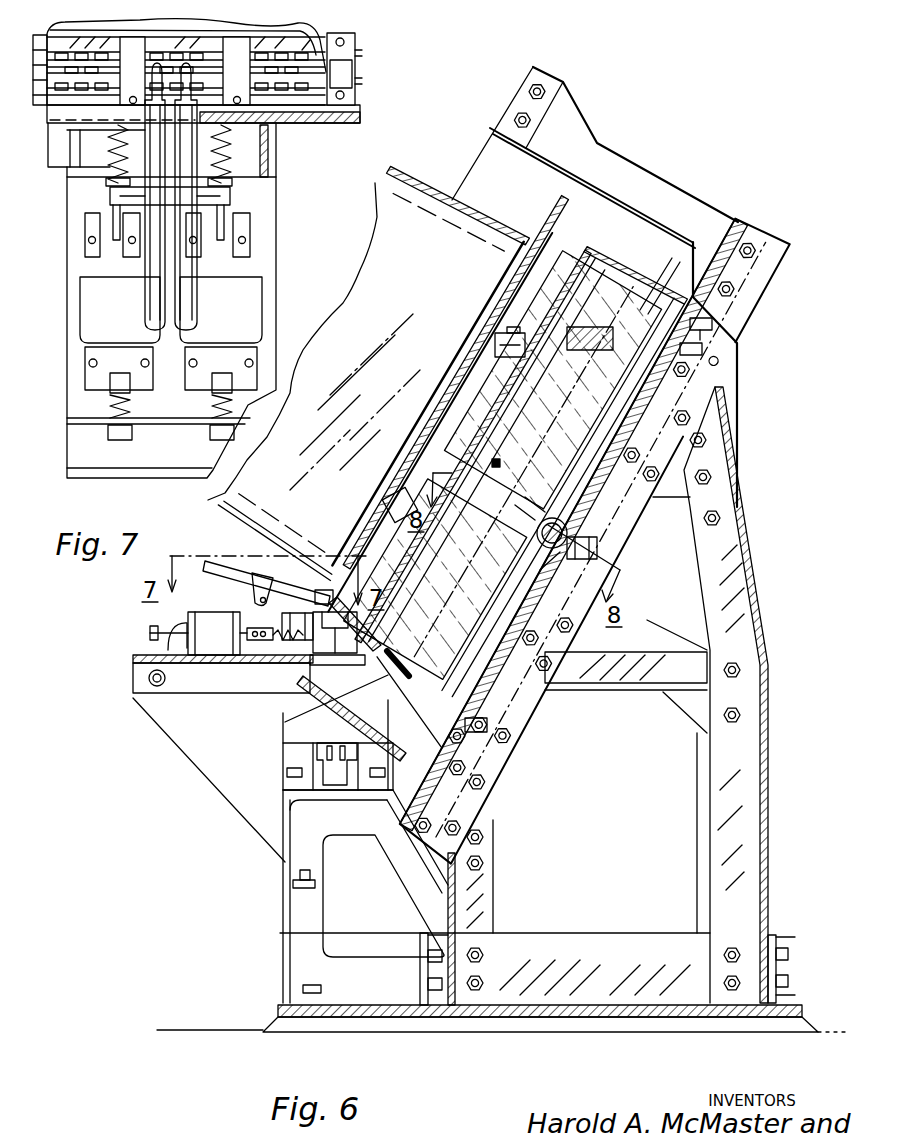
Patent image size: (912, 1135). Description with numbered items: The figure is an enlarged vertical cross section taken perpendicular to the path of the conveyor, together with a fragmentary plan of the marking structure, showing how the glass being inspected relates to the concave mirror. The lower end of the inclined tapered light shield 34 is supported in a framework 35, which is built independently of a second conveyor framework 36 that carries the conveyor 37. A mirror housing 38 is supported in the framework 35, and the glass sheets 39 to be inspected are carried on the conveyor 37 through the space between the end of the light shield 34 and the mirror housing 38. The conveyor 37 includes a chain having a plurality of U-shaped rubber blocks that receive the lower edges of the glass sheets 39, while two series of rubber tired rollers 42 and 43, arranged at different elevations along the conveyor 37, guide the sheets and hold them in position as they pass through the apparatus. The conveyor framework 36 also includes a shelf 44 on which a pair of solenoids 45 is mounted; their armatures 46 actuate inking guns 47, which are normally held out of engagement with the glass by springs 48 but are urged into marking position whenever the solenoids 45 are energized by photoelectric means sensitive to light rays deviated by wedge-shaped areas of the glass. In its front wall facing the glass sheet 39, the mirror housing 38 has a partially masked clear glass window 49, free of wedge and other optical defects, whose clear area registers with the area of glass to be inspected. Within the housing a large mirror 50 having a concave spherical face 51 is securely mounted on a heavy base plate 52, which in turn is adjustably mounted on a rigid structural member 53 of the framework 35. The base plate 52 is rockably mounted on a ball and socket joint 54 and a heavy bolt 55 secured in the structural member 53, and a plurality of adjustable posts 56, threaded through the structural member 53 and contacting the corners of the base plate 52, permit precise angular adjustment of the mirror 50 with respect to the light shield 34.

In FIG. 6, the inclined tapered light shield 34 is at (415, 232).
In FIG. 6, the framework 35 is at (720, 577).
In FIG. 6, the conveyor framework 36 is at (308, 927).
In FIG. 7, the conveyor 37 is at (345, 83).
In FIG. 6, the conveyor 37 is at (320, 753).
In FIG. 6, the mirror housing 38 is at (628, 270).
In FIG. 7, the glass sheets 39 is at (345, 48).
In FIG. 6, the glass sheets 39 is at (555, 237).
In FIG. 6, the rubber tired rollers 42 is at (510, 333).
In FIG. 6, the rubber tired rollers 43 is at (393, 496).
In FIG. 7, the shelf 44 is at (263, 322).
In FIG. 6, the shelf 44 is at (198, 660).
In FIG. 7, the solenoids 45 is at (120, 302).
In FIG. 6, the solenoids 45 is at (223, 633).
In FIG. 7, the armatures 46 is at (120, 188).
In FIG. 6, the armatures 46 is at (290, 642).
In FIG. 7, the inking guns 47 is at (152, 143).
In FIG. 6, the inking guns 47 is at (248, 574).
In FIG. 7, the springs 48 is at (127, 178).
In FIG. 6, the springs 48 is at (297, 640).
In FIG. 6, the clear glass window 49 is at (495, 417).
In FIG. 6, the mirror 50 is at (580, 363).
In FIG. 6, the concave spherical face 51 is at (496, 462).
In FIG. 6, the base plate 52 is at (648, 310).
In FIG. 6, the rigid structural member 53 is at (705, 323).
In FIG. 6, the ball and socket joint 54 is at (568, 527).
In FIG. 6, the bolt 55 is at (598, 545).
In FIG. 6, the adjustable posts 56 is at (690, 350).